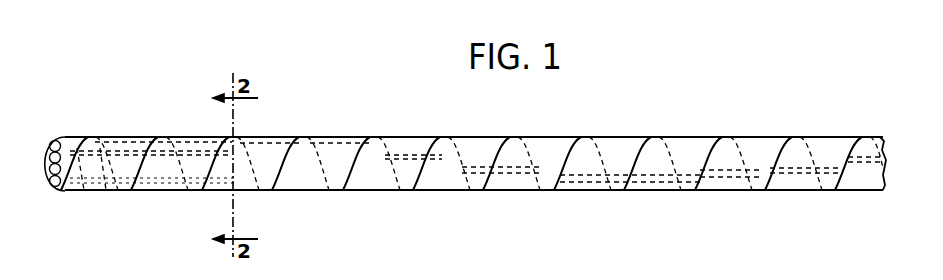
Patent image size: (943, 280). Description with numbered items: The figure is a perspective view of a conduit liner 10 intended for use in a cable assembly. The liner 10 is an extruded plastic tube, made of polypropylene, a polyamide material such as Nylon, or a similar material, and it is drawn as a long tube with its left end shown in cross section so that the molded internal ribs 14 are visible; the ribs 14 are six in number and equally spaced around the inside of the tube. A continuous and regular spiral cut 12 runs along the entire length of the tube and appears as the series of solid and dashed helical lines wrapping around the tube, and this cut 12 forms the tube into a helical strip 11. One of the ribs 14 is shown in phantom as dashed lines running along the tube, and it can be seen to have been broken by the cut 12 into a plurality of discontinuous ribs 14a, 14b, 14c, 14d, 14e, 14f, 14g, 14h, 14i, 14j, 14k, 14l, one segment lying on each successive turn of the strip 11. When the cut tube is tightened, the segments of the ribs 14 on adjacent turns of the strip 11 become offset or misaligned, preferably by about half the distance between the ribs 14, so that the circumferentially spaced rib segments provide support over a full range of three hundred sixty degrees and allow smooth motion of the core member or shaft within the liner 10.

The conduit liner 10 is at (360, 101).
The helical strip 11 is at (296, 192).
The spiral cut 12 is at (355, 172).
The internal ribs 14 is at (64, 191).
The discontinuous rib 14a is at (84, 192).
The discontinuous rib 14b is at (106, 191).
The discontinuous rib 14c is at (198, 136).
The discontinuous rib 14d is at (270, 136).
The discontinuous rib 14e is at (340, 136).
The discontinuous rib 14f is at (420, 136).
The discontinuous rib 14g is at (477, 166).
The discontinuous rib 14h is at (584, 191).
The discontinuous rib 14i is at (641, 192).
The discontinuous rib 14j is at (720, 192).
The discontinuous rib 14k is at (798, 191).
The discontinuous rib 14l is at (851, 192).